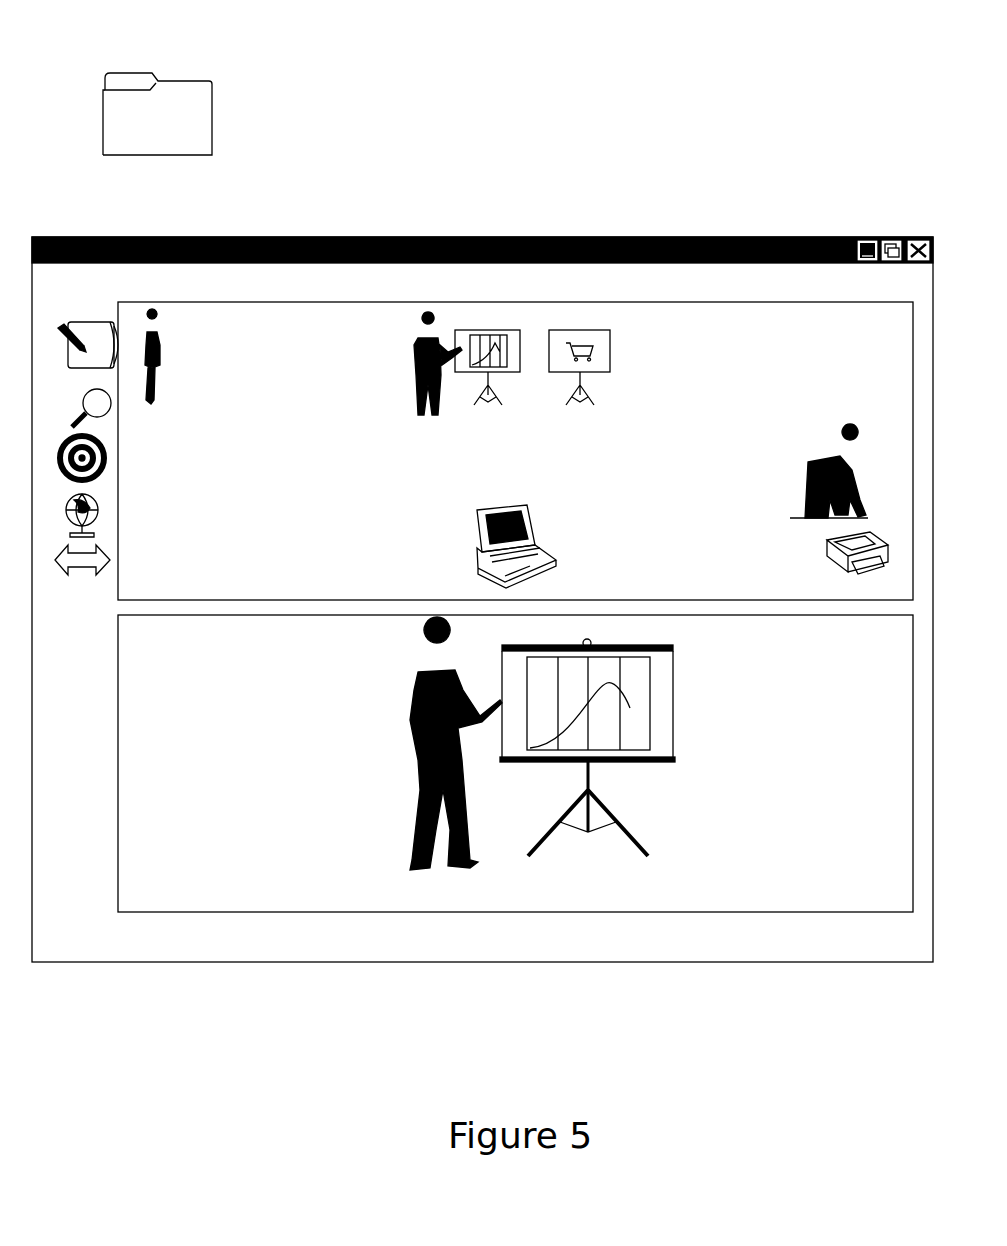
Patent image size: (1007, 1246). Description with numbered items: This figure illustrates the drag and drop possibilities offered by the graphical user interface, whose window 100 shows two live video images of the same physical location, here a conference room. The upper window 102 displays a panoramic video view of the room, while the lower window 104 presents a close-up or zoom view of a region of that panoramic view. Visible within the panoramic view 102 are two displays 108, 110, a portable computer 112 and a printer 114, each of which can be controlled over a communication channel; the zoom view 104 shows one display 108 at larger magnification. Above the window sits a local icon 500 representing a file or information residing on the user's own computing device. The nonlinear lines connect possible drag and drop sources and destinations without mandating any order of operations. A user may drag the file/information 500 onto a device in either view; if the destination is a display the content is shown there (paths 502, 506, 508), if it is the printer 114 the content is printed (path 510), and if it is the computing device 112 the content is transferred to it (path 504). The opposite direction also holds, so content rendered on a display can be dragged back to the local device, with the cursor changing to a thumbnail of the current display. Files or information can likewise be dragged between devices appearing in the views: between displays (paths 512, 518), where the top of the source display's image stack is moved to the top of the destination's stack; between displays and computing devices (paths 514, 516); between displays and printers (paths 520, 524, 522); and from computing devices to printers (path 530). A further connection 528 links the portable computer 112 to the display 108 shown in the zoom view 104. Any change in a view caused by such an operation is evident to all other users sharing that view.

The window 100 is at (722, 232).
The upper window 102 is at (515, 451).
The lower window 104 is at (515, 763).
The display 108 is at (455, 330).
The display 110 is at (605, 328).
The portable computer 112 is at (538, 528).
The printer 114 is at (870, 528).
The local icon 500 is at (152, 65).
The drag and drop path to display 502 is at (465, 540).
The drag and drop path to computing device 504 is at (497, 660).
The drag and drop path to display 506 is at (474, 320).
The drag and drop path to display 508 is at (572, 308).
The drag and drop path to printer 510 is at (823, 533).
The drag and drop path between displays 512 is at (560, 322).
The drag and drop path between display and computing device 514 is at (468, 384).
The drag and drop path between display and computing device 516 is at (553, 382).
The drag and drop path between displays 518 is at (622, 636).
The drag and drop path between display and printer 520 is at (822, 556).
The drag and drop path between display and printer 522 is at (866, 578).
The drag and drop path between display and printer 524 is at (823, 570).
The data flow from laptop to screen 528 is at (563, 639).
The drag and drop path from computing device to printer 530 is at (838, 583).